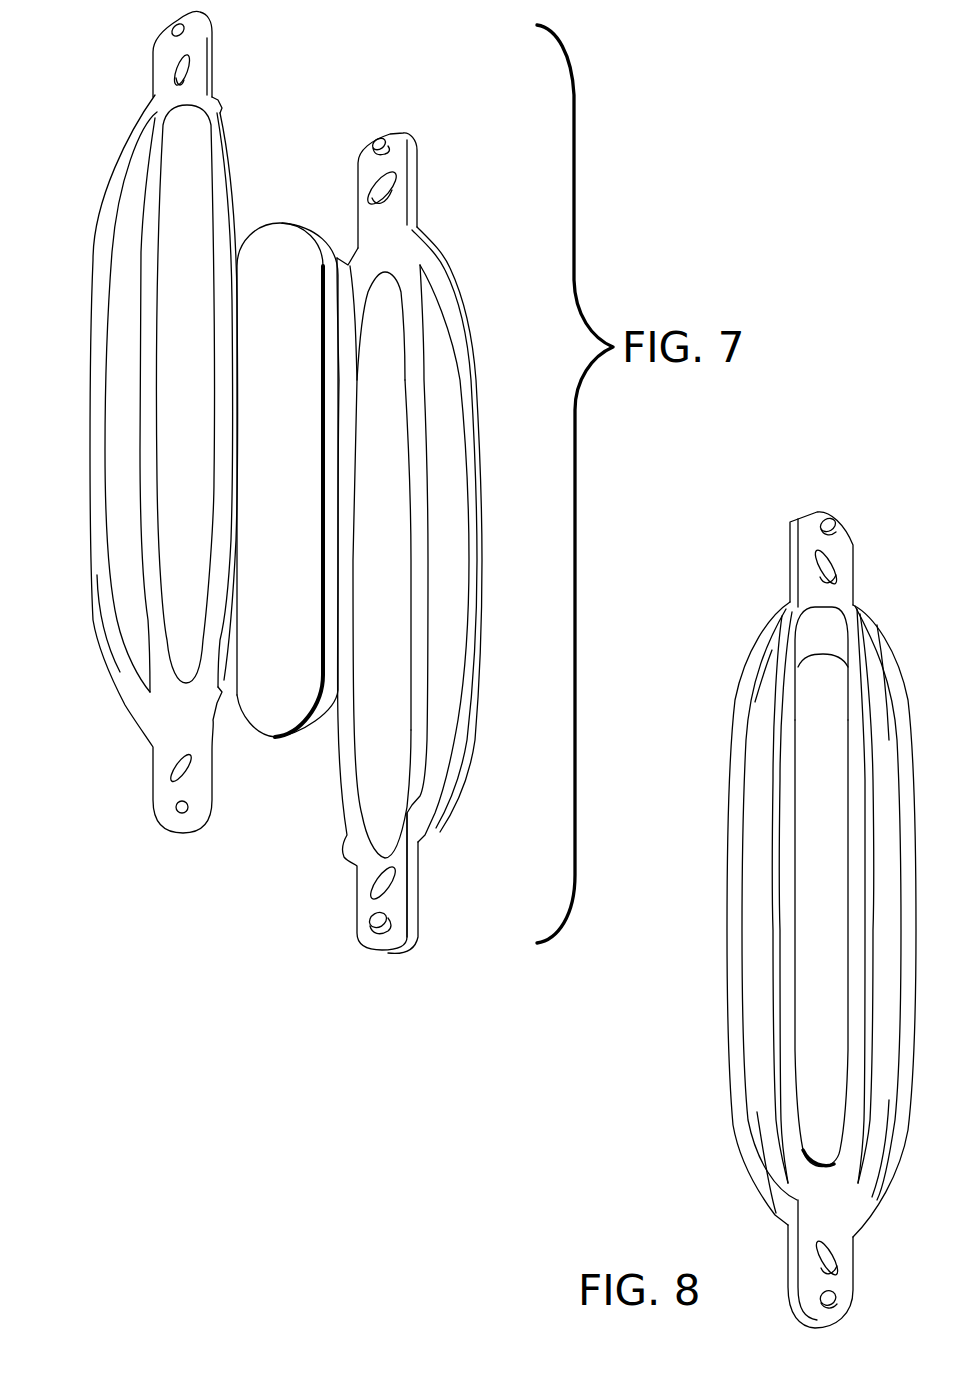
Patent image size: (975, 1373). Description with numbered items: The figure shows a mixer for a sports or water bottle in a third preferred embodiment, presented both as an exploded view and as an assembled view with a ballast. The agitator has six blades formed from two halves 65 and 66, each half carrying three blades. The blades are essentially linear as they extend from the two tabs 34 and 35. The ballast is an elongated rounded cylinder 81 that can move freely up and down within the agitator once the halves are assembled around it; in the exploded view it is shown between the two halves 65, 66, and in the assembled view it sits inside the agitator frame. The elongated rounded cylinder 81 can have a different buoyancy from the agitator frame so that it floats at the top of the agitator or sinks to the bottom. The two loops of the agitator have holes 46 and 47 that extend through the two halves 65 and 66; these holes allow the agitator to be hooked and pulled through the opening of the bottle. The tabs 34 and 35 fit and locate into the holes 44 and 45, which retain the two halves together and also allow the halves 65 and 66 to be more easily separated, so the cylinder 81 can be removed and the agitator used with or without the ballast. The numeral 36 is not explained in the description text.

In FIG. 7, the tab 34 is at (387, 140).
In FIG. 7, the tab 35 is at (392, 912).
In FIG. 8, the mounting hole of clip tab 36 is at (843, 567).
In FIG. 7, the hole 44 is at (172, 34).
In FIG. 7, the hole 45 is at (176, 811).
In FIG. 8, the hole 46 is at (790, 562).
In FIG. 8, the hole 47 is at (788, 1252).
In FIG. 7, the half 65 is at (126, 430).
In FIG. 7, the half 66 is at (441, 512).
In FIG. 7, the elongated rounded cylinder 81 is at (305, 477).
In FIG. 8, the elongated rounded cylinder 81 is at (845, 937).